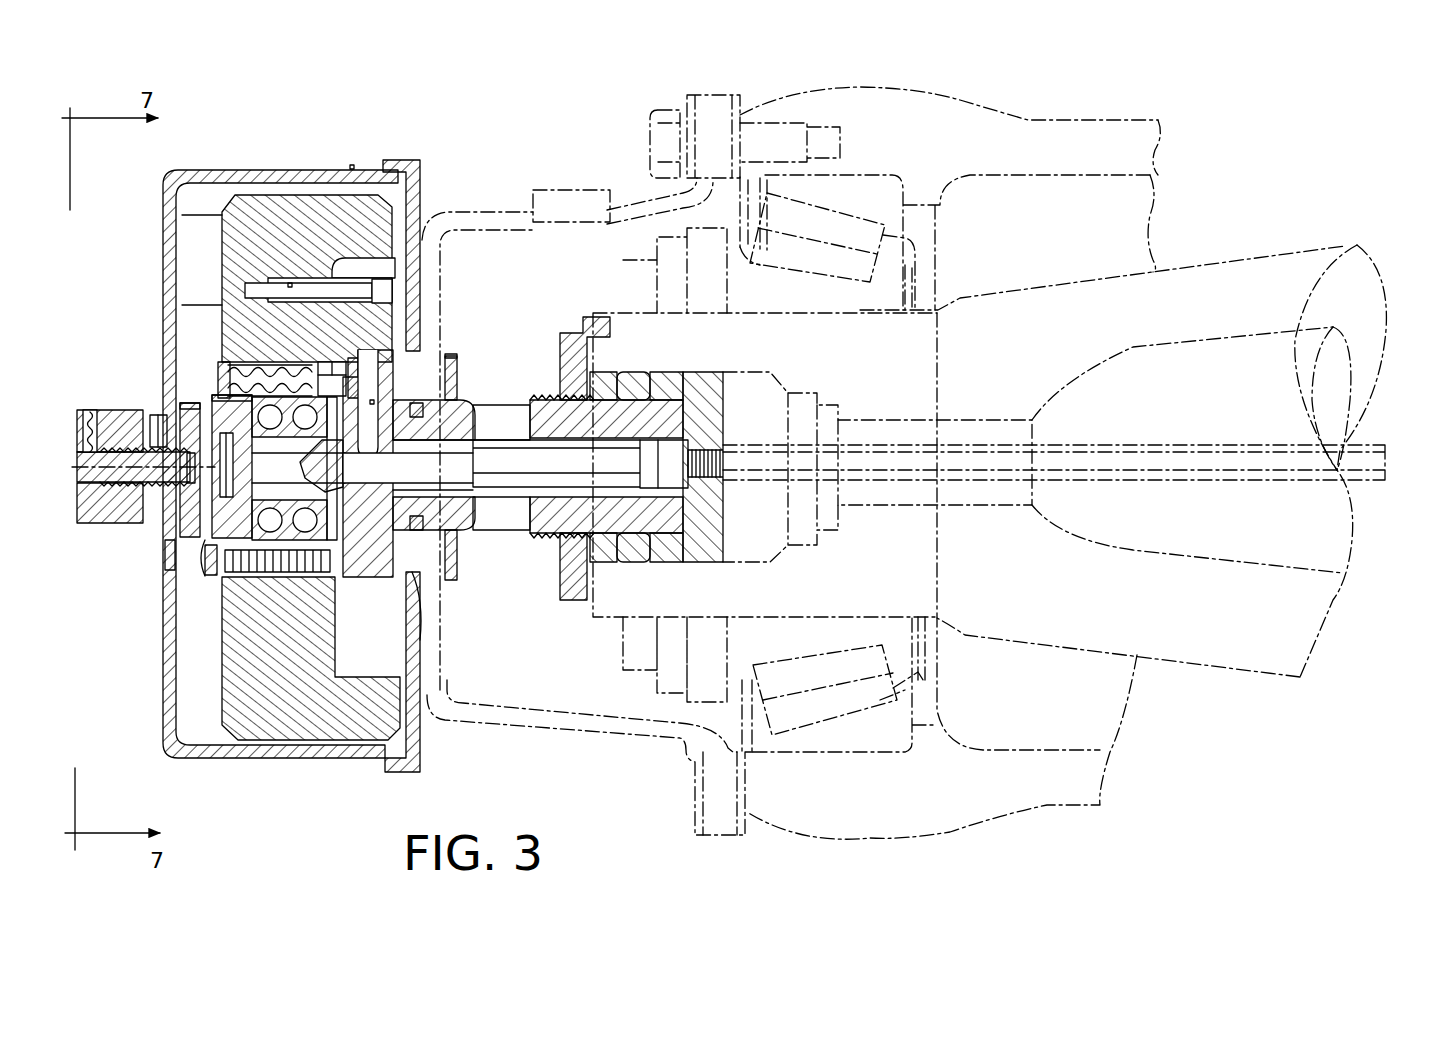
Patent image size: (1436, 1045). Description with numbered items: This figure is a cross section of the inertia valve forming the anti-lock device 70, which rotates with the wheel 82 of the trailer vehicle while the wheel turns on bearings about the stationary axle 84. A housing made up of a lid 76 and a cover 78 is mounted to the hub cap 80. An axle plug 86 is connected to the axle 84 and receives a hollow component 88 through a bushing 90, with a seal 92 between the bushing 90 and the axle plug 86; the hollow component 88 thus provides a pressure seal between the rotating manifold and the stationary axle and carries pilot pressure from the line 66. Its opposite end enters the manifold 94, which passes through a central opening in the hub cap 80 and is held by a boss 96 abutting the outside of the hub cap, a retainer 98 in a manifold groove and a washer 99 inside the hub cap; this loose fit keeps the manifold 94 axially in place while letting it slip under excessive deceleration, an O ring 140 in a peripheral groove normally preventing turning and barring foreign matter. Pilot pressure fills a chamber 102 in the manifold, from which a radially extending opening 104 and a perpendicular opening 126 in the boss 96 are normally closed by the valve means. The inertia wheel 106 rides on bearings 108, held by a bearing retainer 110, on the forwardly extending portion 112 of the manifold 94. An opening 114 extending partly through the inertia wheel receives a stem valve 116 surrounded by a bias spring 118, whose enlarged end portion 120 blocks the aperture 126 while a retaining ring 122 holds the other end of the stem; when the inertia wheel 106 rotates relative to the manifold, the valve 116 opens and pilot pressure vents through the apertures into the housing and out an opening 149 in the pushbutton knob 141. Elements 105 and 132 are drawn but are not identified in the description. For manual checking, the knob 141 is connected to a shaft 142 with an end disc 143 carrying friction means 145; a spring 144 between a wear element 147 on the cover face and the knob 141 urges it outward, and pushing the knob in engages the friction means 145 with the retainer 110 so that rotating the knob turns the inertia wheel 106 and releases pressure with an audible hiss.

The pressure line 66 is at (930, 485).
The anti-lock device 70 is at (354, 166).
The lid 76 is at (413, 182).
The cover 78 is at (224, 175).
The hub cap 80 is at (476, 208).
The wheel 82 is at (875, 88).
The axle 84 is at (775, 318).
The axle plug 86 is at (545, 398).
The hollow component 88 is at (505, 450).
The bushing 90 is at (557, 540).
The seal 92 is at (622, 395).
The manifold 94 is at (464, 534).
The boss 96 is at (352, 580).
The retainer 98 is at (460, 400).
The washer 99 is at (458, 362).
The chamber 102 is at (372, 480).
The radially extending opening 104 is at (372, 402).
The pin 105 is at (362, 345).
The inertia wheel 106 is at (290, 215).
The bearings 108 is at (250, 468).
The bearing retainer 110 is at (212, 520).
The forwardly extending portion 112 is at (222, 400).
The opening 114 is at (265, 335).
The stem valve 116 is at (224, 378).
The bias spring 118 is at (280, 300).
The enlarged end portion 120 is at (325, 362).
The retaining ring 122 is at (250, 368).
The perpendicular opening 126 is at (350, 362).
The passage 132 is at (290, 285).
The O ring 140 is at (452, 548).
The pushbutton knob 141 is at (135, 507).
The shaft 142 is at (187, 497).
The end disc 143 is at (183, 410).
The spring 144 is at (98, 503).
The friction means 145 is at (176, 555).
The wear element 147 is at (150, 418).
The opening 149 is at (72, 455).